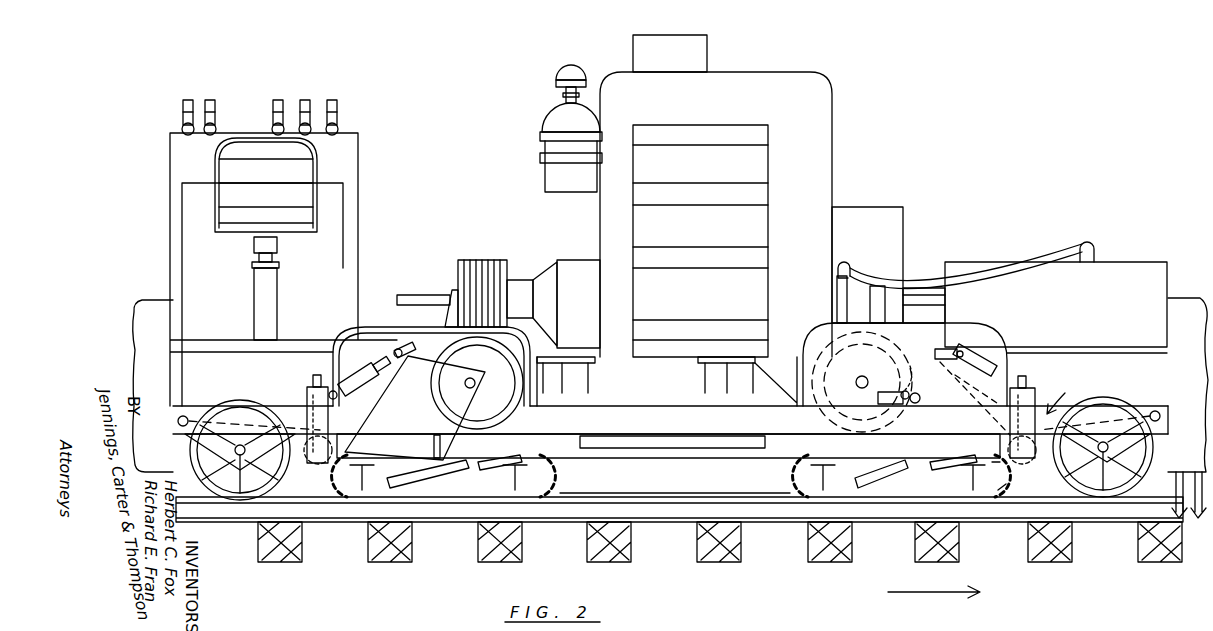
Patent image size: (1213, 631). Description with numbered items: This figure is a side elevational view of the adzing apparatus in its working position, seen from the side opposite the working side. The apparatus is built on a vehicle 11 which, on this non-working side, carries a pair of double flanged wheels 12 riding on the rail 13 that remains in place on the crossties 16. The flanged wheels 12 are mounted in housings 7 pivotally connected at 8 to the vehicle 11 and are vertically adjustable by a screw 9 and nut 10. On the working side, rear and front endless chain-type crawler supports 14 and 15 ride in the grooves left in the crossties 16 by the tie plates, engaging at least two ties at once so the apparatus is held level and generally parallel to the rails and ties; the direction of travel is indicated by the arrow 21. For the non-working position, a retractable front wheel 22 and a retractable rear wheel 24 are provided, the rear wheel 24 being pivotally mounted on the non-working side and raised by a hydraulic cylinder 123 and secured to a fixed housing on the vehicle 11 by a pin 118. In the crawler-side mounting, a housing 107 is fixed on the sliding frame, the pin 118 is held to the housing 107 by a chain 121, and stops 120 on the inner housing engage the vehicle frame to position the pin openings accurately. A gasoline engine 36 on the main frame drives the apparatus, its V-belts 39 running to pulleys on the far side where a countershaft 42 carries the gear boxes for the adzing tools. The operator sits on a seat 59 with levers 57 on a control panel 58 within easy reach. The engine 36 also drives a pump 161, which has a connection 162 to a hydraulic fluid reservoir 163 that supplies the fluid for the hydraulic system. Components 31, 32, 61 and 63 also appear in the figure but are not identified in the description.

The housings 7 is at (232, 445).
The pivotal connection 8 is at (1180, 418).
The screw 9 is at (317, 375).
The nut 10 is at (307, 387).
The vehicle 11 is at (1066, 394).
The double flanged wheels 12 is at (275, 485).
The rail 13 is at (1128, 508).
The rear crawler support 14 is at (555, 478).
The front crawler support 15 is at (1000, 490).
The crossties 16 is at (524, 546).
The arrow 21 is at (918, 590).
The retractable front wheel 22 is at (905, 352).
The retractable rear wheel 24 is at (431, 393).
The rear bumper 31 is at (1188, 298).
The front bumper 32 is at (140, 325).
The gasoline engine 36 is at (781, 86).
The V-belts 39 is at (470, 264).
The countershaft 42 is at (408, 302).
The levers 57 is at (215, 108).
The control panel 58 is at (347, 150).
The seat 59 is at (300, 232).
The exhaust stack 61 is at (718, 48).
The platform 63 is at (665, 448).
The housing 107 is at (975, 398).
The pin 118 is at (915, 384).
The stops 120 is at (402, 362).
The chain 121 is at (886, 378).
The hydraulic cylinder 123 is at (352, 372).
The pump 161 is at (848, 306).
The connection 162 is at (1020, 266).
The hydraulic fluid reservoir 163 is at (1056, 307).